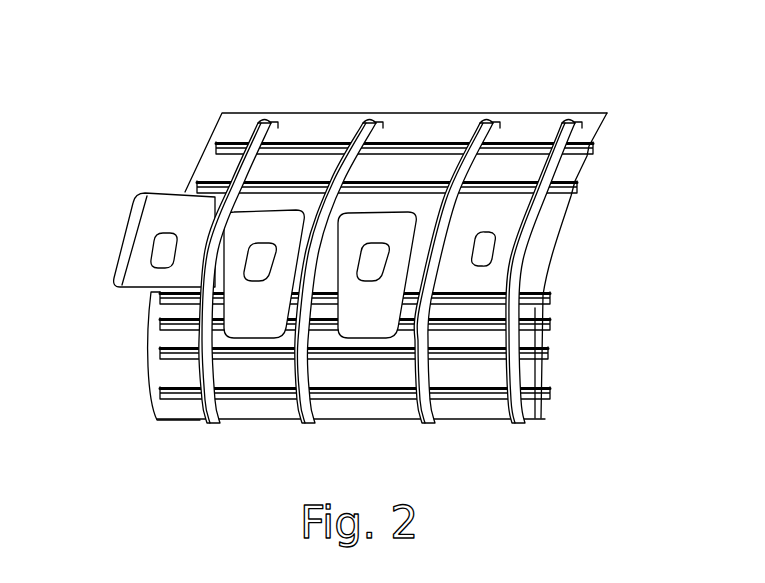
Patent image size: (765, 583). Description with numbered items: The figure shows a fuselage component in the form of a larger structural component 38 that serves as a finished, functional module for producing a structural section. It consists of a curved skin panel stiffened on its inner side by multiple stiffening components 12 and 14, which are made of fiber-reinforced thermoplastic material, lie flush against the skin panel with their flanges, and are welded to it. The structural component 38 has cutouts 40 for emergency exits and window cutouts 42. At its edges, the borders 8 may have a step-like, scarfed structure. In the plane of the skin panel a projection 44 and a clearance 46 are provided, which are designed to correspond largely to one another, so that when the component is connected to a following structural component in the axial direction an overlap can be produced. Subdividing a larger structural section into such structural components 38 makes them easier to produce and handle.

The border 8 is at (190, 155).
The stiffening component 12 is at (303, 152).
The stiffening component 14 is at (570, 127).
The structural component 38 is at (356, 252).
The cutouts for emergency exits 40 is at (250, 323).
The window cutouts 42 is at (163, 248).
The projection 44 is at (145, 215).
The clearance 46 is at (575, 206).